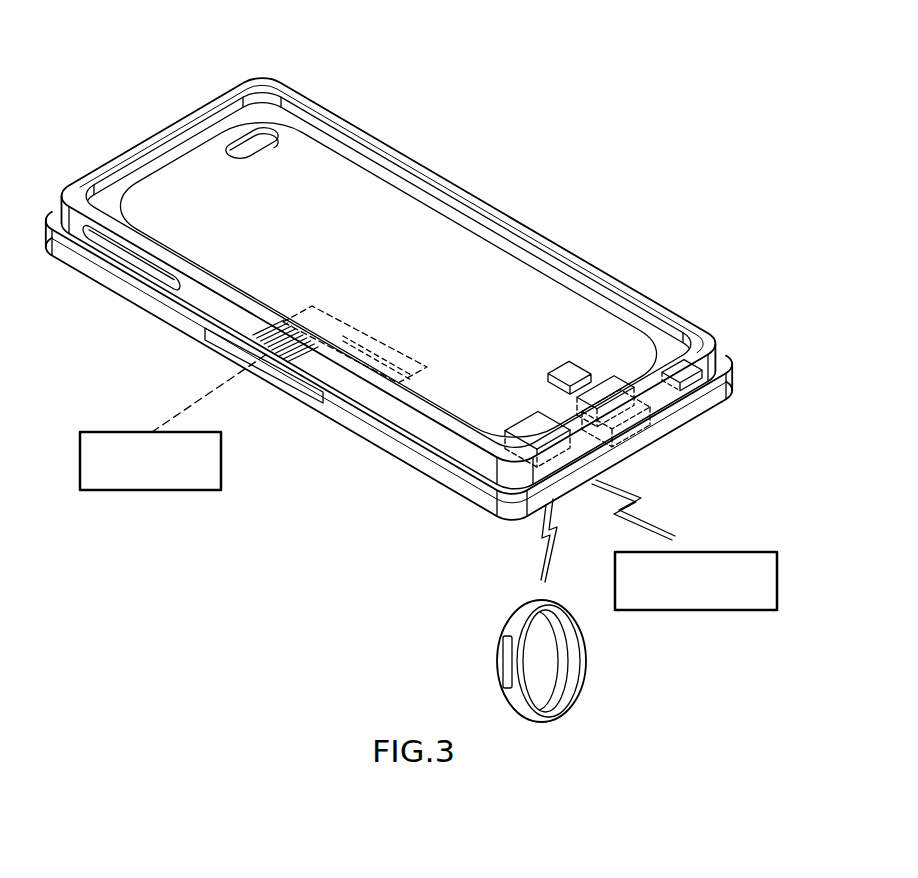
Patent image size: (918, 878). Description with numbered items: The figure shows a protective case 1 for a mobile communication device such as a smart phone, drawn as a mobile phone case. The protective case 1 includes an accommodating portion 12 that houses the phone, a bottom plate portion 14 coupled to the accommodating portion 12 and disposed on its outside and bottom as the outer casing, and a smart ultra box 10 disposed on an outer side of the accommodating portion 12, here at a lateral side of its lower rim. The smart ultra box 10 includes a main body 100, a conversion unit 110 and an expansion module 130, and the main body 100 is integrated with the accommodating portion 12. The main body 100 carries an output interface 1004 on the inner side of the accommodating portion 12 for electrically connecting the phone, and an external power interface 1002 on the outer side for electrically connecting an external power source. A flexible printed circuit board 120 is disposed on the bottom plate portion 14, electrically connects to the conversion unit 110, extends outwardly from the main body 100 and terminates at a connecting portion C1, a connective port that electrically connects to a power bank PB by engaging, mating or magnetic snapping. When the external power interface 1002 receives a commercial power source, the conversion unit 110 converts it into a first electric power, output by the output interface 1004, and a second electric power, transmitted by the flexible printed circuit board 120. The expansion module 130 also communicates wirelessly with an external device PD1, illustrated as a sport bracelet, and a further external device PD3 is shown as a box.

The protective case 1 is at (319, 71).
The smart ultra box 10 is at (699, 316).
The accommodating portion 12 is at (481, 197).
The bottom plate portion 14 is at (421, 468).
The main body 100 is at (606, 365).
The external power interface 1002 is at (698, 388).
The output interface 1004 is at (560, 371).
The conversion unit 110 is at (614, 405).
The flexible printed circuit board 120 is at (326, 320).
The expansion module 130 is at (530, 428).
The connecting portion C1 is at (290, 379).
The power bank PB is at (120, 432).
The external device PD1 is at (581, 655).
The external device PD3 is at (712, 613).